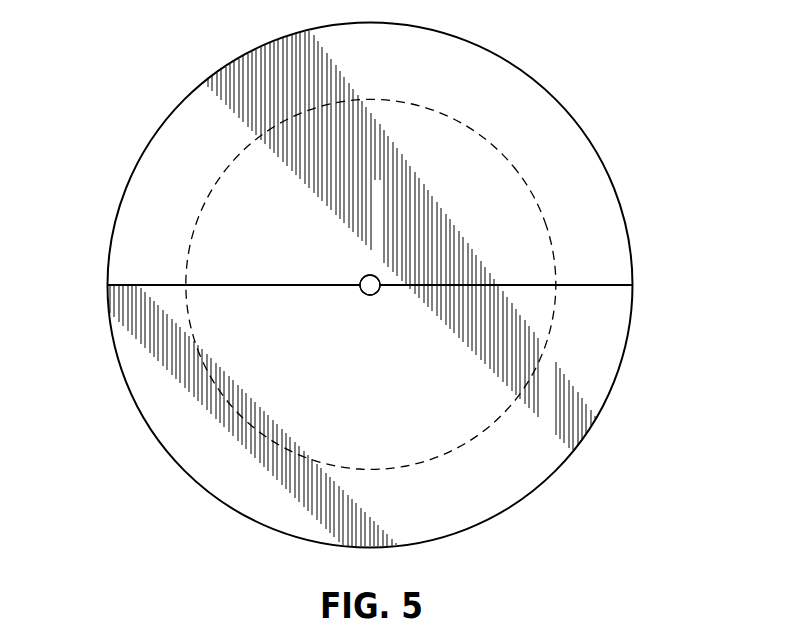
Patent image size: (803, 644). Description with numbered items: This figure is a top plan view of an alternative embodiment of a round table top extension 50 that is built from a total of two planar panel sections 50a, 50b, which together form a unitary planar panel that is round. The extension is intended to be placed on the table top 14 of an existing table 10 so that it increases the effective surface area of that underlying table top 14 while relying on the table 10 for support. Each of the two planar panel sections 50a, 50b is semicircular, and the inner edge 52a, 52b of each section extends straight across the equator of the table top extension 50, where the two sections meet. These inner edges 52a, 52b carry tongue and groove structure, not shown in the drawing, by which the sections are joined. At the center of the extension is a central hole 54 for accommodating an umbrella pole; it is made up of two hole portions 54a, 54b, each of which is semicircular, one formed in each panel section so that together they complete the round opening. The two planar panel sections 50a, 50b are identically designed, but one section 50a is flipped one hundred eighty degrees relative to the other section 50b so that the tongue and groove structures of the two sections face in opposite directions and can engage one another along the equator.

The table top extension 50 is at (526, 73).
The planar panel section 50a is at (399, 81).
The planar panel section 50b is at (463, 503).
The table 10 is at (194, 217).
The table top 14 is at (524, 182).
The inner edge 52a is at (153, 285).
The inner edge 52b is at (593, 286).
The central hole 54 is at (361, 296).
The hole portion 54a is at (365, 276).
The hole portion 54b is at (368, 295).